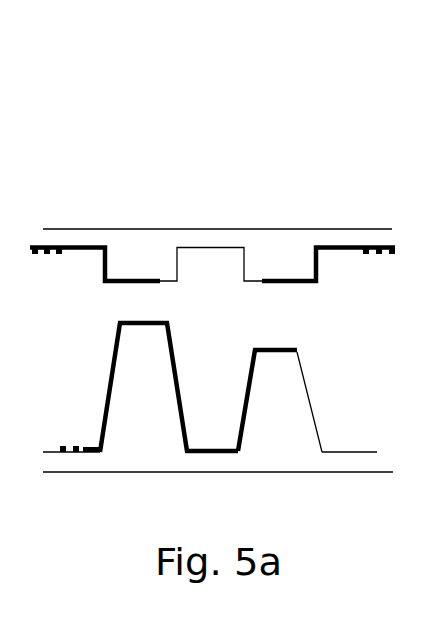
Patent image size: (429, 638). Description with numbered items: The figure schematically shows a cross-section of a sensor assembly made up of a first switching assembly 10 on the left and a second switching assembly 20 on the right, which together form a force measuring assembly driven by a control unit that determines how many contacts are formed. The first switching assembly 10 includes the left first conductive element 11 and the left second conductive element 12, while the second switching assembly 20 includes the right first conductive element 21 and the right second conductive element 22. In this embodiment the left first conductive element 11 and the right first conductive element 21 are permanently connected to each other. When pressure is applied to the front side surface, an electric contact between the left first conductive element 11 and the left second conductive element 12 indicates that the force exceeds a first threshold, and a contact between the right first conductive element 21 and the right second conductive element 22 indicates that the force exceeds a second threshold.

The first switching assembly 10 is at (116, 209).
The second switching assembly 20 is at (327, 184).
The left first conductive element 11 is at (108, 378).
The right first conductive element 21 is at (297, 352).
The left second conductive element 12 is at (135, 283).
The right second conductive element 22 is at (300, 284).